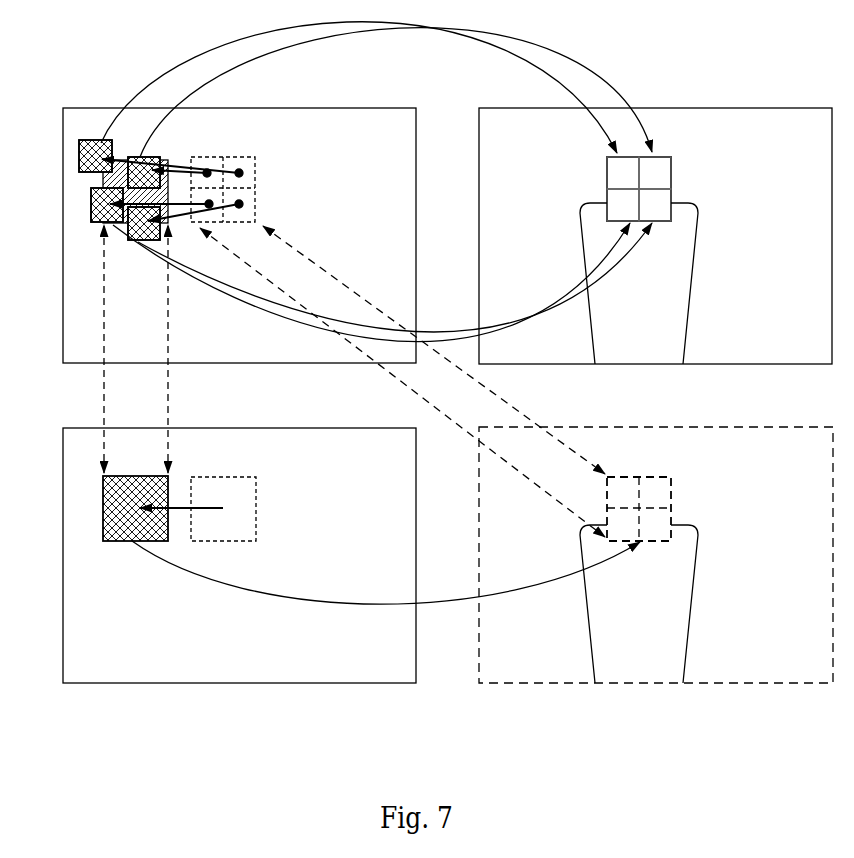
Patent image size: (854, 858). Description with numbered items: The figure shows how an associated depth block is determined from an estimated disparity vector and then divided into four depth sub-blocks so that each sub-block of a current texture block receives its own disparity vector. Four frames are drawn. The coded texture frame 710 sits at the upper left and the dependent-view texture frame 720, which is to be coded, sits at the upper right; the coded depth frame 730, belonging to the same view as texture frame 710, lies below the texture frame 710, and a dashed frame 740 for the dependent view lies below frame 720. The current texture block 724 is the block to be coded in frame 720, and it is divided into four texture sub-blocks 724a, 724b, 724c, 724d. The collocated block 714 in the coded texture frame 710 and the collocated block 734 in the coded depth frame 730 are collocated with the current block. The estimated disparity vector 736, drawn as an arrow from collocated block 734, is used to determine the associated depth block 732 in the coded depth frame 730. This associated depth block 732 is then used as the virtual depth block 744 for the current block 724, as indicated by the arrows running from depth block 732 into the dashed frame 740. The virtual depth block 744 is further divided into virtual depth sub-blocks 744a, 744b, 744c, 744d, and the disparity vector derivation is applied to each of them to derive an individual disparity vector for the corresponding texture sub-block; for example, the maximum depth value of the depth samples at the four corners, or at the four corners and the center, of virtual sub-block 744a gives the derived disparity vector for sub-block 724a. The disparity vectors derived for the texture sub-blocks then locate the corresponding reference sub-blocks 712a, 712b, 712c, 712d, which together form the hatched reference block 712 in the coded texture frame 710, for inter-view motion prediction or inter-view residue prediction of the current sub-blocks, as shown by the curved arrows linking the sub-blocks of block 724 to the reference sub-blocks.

The coded texture frame 710 is at (348, 108).
The reference block 712 is at (103, 179).
The first reference sub-block 712a is at (84, 140).
The second reference sub-block 712b is at (138, 157).
The third reference sub-block 712c is at (92, 207).
The fourth reference sub-block 712d is at (138, 242).
The collocated block in coded texture frame 714 is at (233, 157).
The dependent-view texture frame 720 is at (764, 108).
The current texture block 724 is at (657, 157).
The first texture sub-block 724a is at (627, 157).
The second texture sub-block 724b is at (672, 172).
The third texture sub-block 724c is at (595, 364).
The fourth texture sub-block 724d is at (683, 364).
The coded depth frame 730 is at (356, 428).
The associated depth block 732 is at (103, 503).
The collocated block in coded depth frame 734 is at (362, 395).
The estimated disparity vector 736 is at (277, 507).
The virtual depth frame 740 is at (767, 430).
The virtual depth block 744 is at (652, 476).
The first virtual depth sub-block 744a is at (626, 476).
The second virtual depth sub-block 744b is at (672, 490).
The third virtual depth sub-block 744c is at (595, 683).
The fourth virtual depth sub-block 744d is at (683, 683).